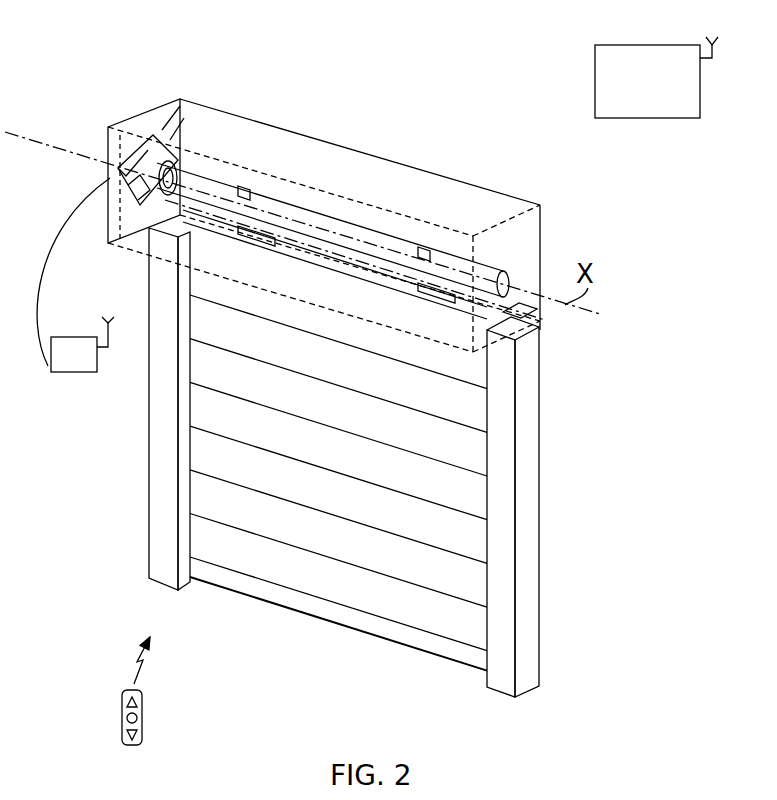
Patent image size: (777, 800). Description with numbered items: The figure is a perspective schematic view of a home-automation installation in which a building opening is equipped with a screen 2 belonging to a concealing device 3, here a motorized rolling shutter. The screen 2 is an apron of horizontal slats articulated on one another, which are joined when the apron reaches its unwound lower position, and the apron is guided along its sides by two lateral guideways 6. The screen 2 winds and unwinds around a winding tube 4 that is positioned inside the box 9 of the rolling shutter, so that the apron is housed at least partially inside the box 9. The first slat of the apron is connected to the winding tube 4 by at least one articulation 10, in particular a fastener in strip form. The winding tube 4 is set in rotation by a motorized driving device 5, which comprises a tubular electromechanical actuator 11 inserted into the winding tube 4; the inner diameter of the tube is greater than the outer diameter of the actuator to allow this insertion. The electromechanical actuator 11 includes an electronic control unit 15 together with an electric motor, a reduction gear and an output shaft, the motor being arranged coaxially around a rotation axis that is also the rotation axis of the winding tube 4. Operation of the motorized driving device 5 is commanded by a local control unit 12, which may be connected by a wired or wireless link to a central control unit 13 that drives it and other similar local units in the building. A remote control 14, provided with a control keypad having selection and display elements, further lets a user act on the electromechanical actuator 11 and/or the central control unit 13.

The screen 2 is at (352, 597).
The concealing device 3 is at (307, 365).
The winding tube 4 is at (310, 212).
The motorized driving device 5 is at (192, 114).
The lateral guideways 6 is at (163, 560).
The box 9 is at (462, 203).
The articulation 10 is at (239, 190).
The electromechanical actuator 11 is at (101, 226).
The local control unit 12 is at (68, 348).
The central control unit 13 is at (600, 86).
The remote control 14 is at (143, 722).
The electronic control unit 15 is at (173, 176).